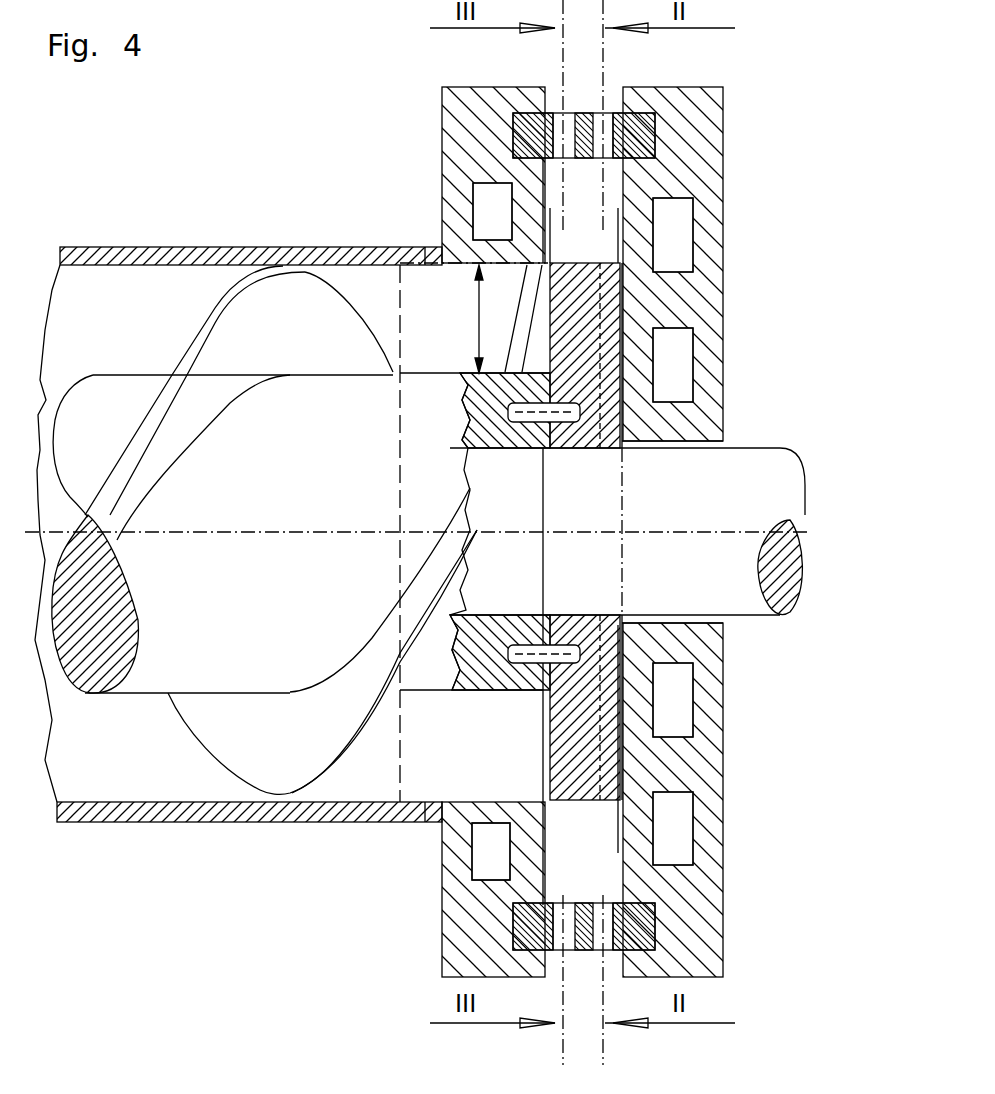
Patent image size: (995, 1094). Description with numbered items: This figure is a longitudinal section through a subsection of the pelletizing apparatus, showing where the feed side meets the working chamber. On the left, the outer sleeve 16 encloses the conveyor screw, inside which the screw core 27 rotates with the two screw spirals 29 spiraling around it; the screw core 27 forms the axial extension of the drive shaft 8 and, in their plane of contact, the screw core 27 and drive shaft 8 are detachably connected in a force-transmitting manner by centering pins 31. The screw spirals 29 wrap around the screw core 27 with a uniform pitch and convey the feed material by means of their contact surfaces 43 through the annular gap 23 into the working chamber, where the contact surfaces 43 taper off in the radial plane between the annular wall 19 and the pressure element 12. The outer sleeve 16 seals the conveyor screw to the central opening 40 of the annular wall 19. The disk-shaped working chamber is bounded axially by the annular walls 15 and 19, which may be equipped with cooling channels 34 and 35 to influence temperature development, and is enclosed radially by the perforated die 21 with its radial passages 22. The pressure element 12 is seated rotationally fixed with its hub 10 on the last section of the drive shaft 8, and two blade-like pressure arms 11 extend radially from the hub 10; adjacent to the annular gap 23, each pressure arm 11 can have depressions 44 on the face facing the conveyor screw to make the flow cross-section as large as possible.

The drive shaft 8 is at (715, 588).
The hub 10 is at (550, 700).
The pressure arm 11 is at (553, 168).
The pressure element 12 is at (622, 425).
The annular wall 15 is at (723, 200).
The outer sleeve 16 is at (125, 247).
The annular wall 19 is at (447, 144).
The perforated die 21 is at (650, 97).
The radial passages 22 is at (580, 113).
The annular gap 23 is at (479, 330).
The screw core 27 is at (78, 688).
The screw spirals 29 is at (200, 320).
The centering pins 31 is at (553, 642).
The cooling channels 34 is at (723, 262).
The cooling channels 35 is at (490, 222).
The central opening 40 is at (428, 262).
The contact surface 43 is at (283, 305).
The depressions 44 is at (665, 293).